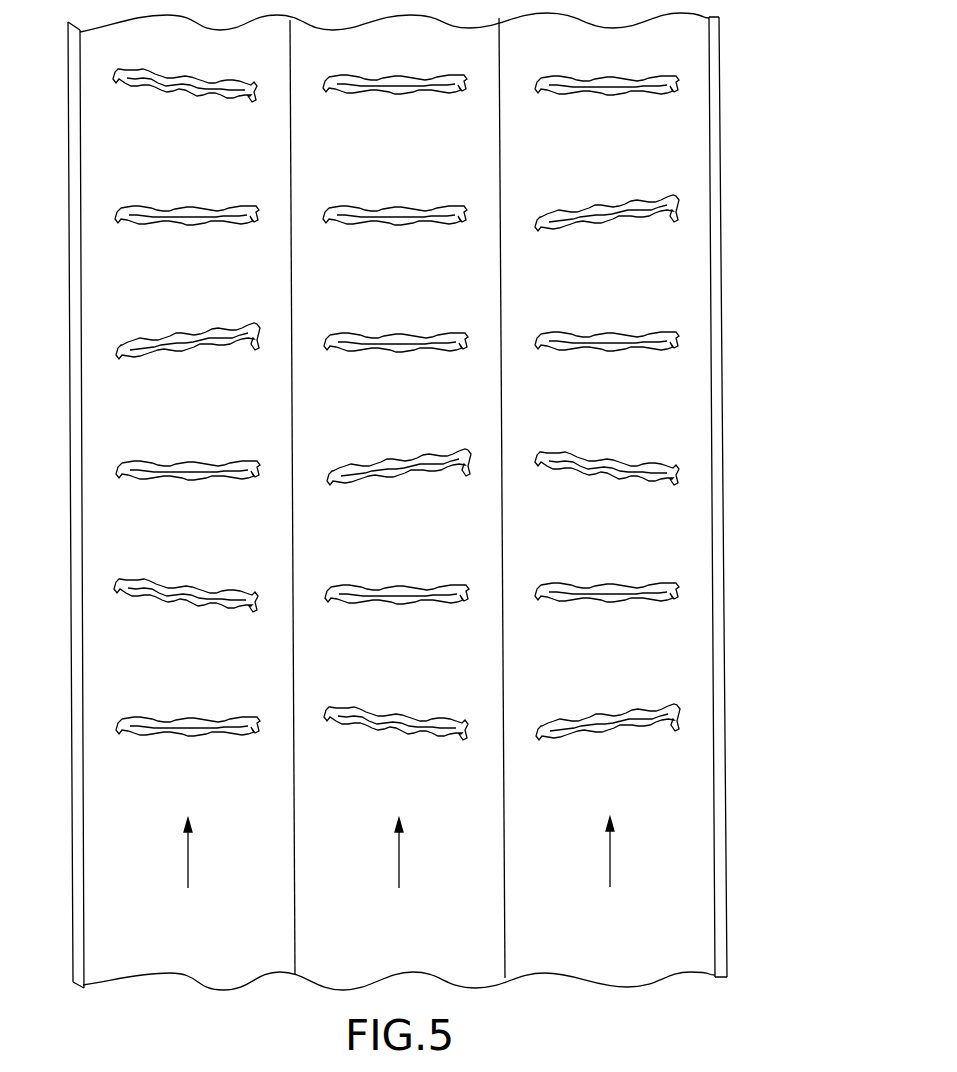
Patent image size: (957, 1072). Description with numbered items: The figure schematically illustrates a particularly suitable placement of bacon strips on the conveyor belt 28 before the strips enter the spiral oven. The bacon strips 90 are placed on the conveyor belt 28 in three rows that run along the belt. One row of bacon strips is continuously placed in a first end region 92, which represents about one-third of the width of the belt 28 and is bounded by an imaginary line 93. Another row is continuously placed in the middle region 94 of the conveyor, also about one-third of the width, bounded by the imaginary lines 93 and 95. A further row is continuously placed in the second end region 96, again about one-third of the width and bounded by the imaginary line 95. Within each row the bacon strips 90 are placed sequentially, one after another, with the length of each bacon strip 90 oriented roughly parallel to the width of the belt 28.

The conveyor belt 28 is at (727, 157).
The bacon strips 90 is at (192, 332).
The first end region 92 is at (623, 671).
The imaginary line 93 is at (505, 780).
The middle region 94 is at (411, 671).
The imaginary line 95 is at (293, 783).
The second end region 96 is at (201, 672).